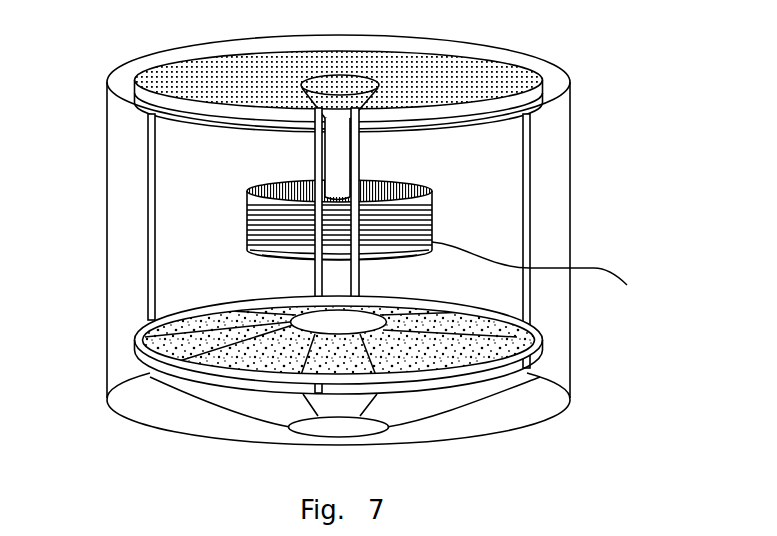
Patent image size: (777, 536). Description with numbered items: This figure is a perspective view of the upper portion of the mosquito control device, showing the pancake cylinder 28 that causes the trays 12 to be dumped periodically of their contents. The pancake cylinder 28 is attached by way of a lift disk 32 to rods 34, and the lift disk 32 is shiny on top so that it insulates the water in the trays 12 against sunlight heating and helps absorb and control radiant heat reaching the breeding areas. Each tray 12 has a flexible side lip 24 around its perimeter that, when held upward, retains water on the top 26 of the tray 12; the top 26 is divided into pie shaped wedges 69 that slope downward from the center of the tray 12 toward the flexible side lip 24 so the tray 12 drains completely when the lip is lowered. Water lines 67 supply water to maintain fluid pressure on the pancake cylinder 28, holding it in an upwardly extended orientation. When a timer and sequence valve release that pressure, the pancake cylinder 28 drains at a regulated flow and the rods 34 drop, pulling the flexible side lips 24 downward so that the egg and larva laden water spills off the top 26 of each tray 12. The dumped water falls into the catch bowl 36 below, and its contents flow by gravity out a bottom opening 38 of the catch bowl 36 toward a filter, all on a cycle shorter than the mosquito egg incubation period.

The tray 12 is at (508, 333).
The flexible side lip 24 is at (433, 297).
The top 26 is at (247, 318).
The pancake cylinder 28 is at (433, 203).
The lift disk 32 is at (428, 62).
The rods 34 is at (149, 237).
The catch bowl 36 is at (548, 422).
The bottom opening 38 is at (352, 428).
The water lines 67 is at (594, 268).
The pie shaped wedges 69 is at (500, 343).